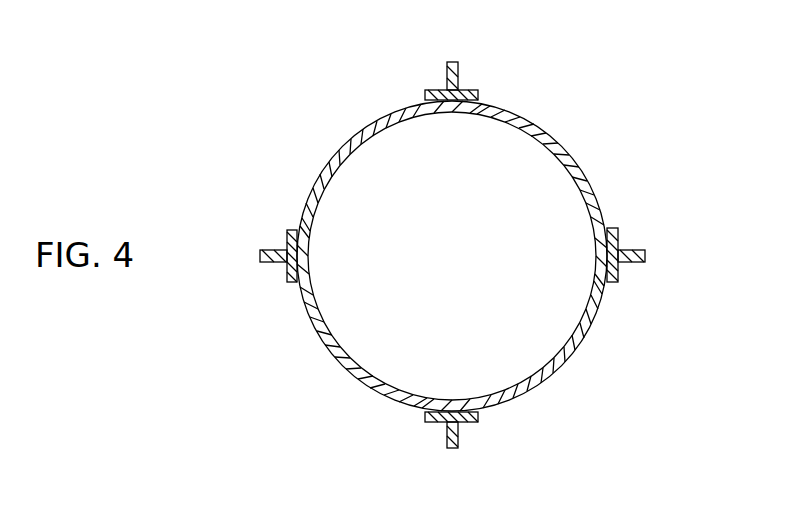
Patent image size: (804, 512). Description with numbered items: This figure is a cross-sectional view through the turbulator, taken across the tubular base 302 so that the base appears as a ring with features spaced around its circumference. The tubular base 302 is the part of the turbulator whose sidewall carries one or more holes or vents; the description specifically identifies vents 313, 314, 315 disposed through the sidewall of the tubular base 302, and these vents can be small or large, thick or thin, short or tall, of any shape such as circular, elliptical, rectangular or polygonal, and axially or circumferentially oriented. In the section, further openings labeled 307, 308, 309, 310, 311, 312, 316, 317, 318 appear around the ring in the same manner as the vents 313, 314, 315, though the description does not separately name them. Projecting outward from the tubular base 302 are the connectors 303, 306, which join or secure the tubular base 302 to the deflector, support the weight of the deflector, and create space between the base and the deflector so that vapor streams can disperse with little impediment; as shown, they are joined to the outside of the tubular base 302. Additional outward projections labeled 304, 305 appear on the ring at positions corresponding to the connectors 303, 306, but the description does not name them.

The tubular base 302 is at (552, 118).
The connector 303 is at (618, 275).
The bottom tab 304 is at (432, 423).
The left tab 305 is at (287, 232).
The connector 306 is at (473, 90).
The ring segment 307 is at (392, 398).
The ring segment 308 is at (338, 360).
The ring segment 309 is at (312, 317).
The ring segment 310 is at (313, 197).
The ring segment 311 is at (340, 145).
The ring segment 312 is at (390, 115).
The vent 313 is at (517, 115).
The vent 314 is at (562, 147).
The vent 315 is at (593, 197).
The ring segment 316 is at (590, 318).
The ring segment 317 is at (552, 378).
The ring segment 318 is at (513, 400).